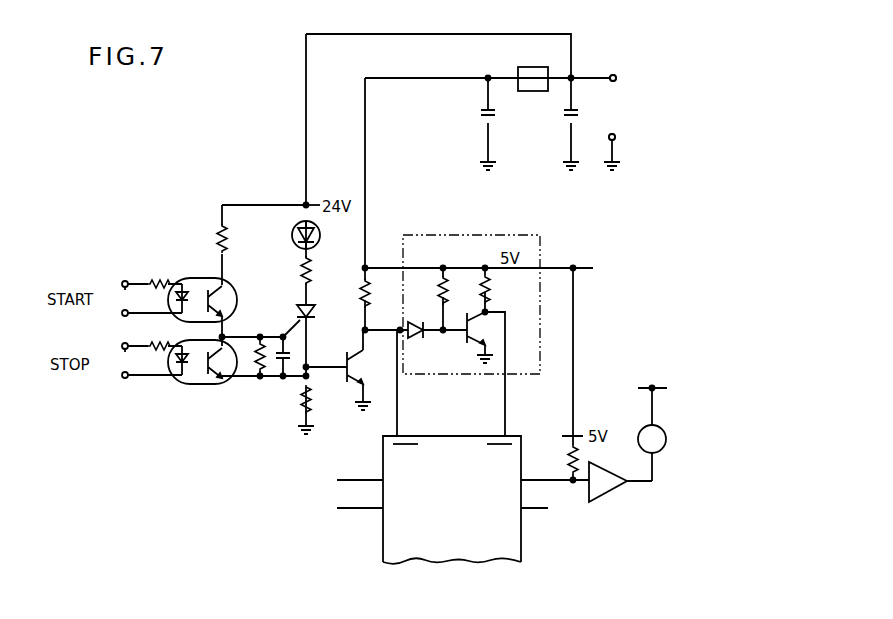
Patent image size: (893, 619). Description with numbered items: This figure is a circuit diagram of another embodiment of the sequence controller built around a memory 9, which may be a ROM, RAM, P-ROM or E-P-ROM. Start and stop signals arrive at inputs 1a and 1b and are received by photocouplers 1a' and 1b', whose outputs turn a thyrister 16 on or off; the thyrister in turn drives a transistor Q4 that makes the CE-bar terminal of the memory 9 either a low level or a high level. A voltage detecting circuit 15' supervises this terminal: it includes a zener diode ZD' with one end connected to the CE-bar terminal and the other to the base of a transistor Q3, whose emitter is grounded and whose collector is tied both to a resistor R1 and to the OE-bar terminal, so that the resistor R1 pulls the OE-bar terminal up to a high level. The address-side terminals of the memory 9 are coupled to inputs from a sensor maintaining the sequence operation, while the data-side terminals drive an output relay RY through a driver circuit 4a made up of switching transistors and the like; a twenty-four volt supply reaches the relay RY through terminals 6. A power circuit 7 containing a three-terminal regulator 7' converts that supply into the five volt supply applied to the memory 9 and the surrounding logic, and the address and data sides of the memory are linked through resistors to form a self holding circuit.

The start signal input 1a is at (116, 267).
The stop signal input 1b is at (108, 337).
The photocoupler 1a' is at (218, 294).
The photocoupler 1b' is at (202, 383).
The thyrister 16 is at (309, 320).
The voltage detecting circuit 15' is at (471, 278).
The three-terminal regulator 7' is at (533, 65).
The power circuit 7 is at (529, 102).
The terminals 6 is at (617, 77).
The memory 9 is at (447, 437).
The driver circuit 4a is at (608, 498).
The transistor Q3 is at (480, 337).
The transistor Q4 is at (342, 339).
The zener diode ZD' is at (416, 343).
The resistor R1 is at (497, 289).
The output relay RY is at (665, 446).